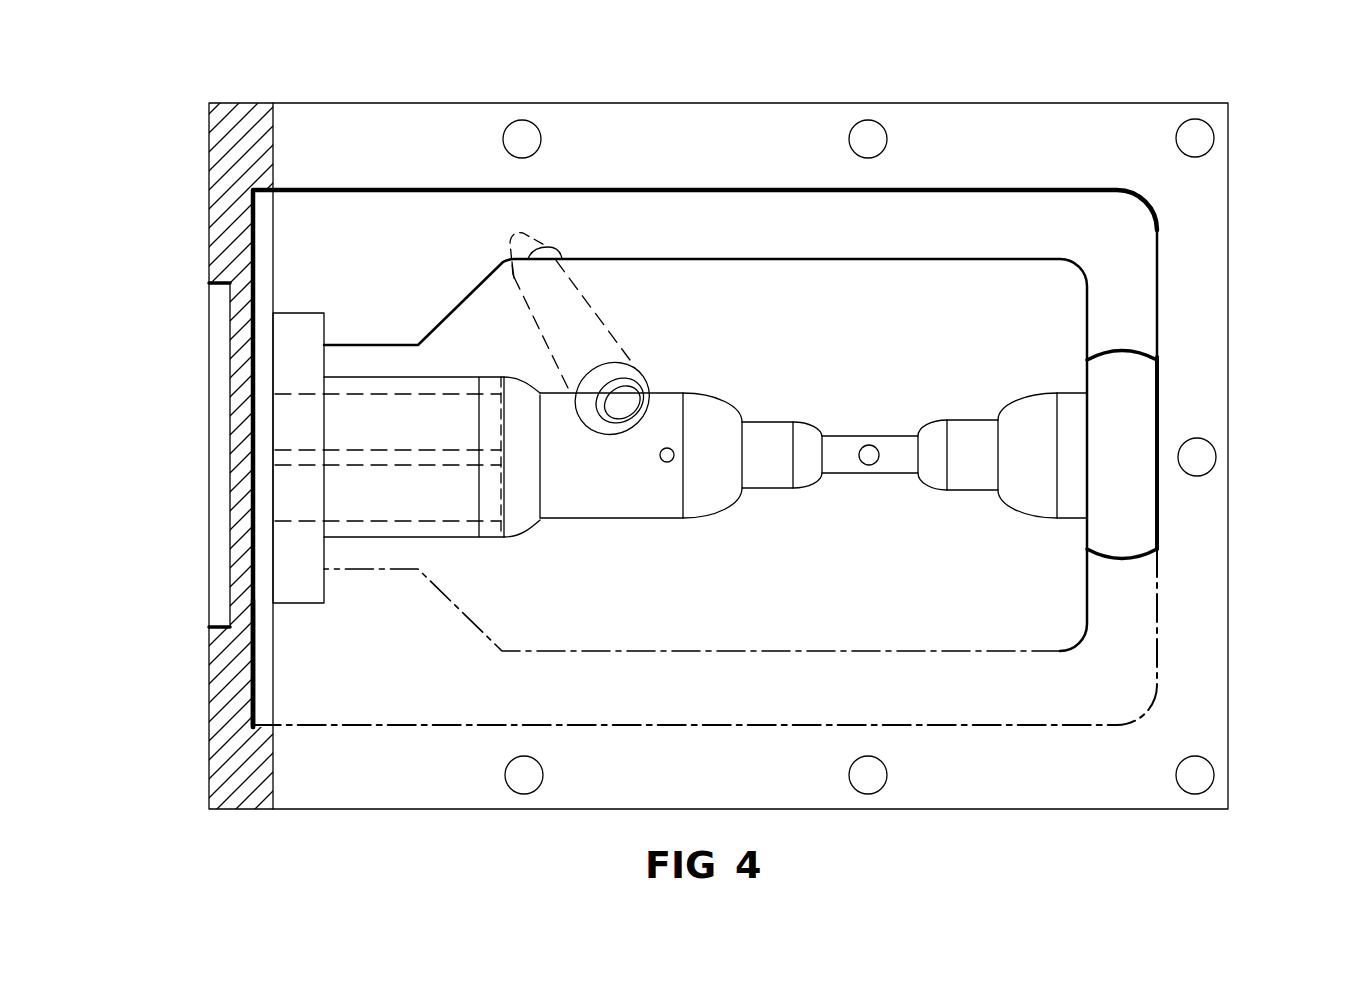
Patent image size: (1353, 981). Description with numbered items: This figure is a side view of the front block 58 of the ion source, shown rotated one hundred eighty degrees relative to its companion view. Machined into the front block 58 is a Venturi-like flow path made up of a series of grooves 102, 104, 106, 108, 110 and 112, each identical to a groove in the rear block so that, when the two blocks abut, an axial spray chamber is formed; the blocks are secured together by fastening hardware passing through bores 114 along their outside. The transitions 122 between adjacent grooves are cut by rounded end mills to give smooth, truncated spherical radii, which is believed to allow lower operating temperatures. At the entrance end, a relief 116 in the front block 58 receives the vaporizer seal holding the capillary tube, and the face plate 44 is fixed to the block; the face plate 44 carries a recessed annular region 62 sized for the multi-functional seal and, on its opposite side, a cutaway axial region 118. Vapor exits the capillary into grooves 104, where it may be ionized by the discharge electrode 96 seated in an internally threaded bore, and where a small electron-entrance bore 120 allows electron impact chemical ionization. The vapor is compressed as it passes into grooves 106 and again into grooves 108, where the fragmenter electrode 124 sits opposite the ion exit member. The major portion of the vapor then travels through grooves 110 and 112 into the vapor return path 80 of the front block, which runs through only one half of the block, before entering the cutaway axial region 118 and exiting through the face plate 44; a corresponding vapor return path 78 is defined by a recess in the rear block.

The face plate 44 is at (223, 205).
The front block 58 is at (1178, 70).
The recessed annular region 62 is at (232, 339).
The vapor return path 78 is at (1157, 633).
The vapor return path 80 is at (1157, 303).
The discharge electrode 96 is at (637, 372).
The groove 102 is at (448, 538).
The groove 104 is at (578, 520).
The groove 106 is at (775, 490).
The groove 108 is at (898, 462).
The groove 110 is at (972, 470).
The groove 112 is at (1073, 500).
The bores 114 is at (522, 139).
The relief 116 is at (325, 590).
The cutaway axial region 118 is at (254, 677).
The electron-entrance bore 120 is at (667, 462).
The transitions 122 is at (817, 422).
The fragmenter electrode 124 is at (869, 445).